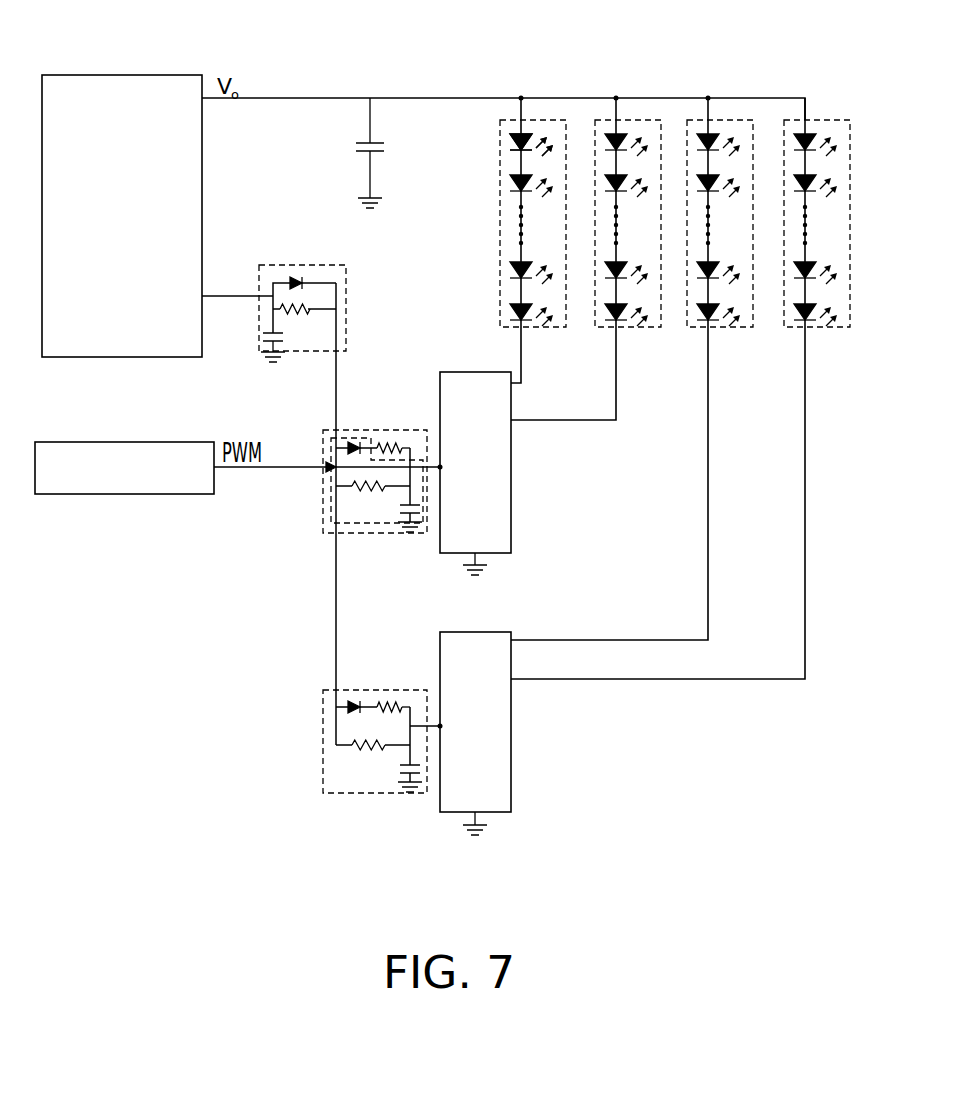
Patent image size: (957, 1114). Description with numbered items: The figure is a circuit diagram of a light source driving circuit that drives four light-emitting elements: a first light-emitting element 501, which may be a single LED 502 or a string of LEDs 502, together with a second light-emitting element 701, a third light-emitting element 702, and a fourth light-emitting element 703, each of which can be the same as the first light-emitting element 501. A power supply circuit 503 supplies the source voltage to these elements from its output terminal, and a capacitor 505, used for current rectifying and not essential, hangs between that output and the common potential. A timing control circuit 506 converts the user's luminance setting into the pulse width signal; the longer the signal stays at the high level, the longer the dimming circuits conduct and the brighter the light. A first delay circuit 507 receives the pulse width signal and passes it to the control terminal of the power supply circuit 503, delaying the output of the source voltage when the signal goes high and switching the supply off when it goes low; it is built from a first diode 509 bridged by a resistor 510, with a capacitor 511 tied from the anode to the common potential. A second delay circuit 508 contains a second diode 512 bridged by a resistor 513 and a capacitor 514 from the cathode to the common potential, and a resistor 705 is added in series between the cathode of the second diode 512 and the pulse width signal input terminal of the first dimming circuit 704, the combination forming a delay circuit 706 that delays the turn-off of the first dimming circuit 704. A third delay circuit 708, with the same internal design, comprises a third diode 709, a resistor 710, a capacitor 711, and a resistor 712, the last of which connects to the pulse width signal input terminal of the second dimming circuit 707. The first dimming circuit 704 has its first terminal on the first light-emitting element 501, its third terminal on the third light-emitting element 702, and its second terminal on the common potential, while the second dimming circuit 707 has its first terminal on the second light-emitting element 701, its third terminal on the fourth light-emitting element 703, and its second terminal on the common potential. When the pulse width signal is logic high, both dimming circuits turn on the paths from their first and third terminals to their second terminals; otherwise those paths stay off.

The first light-emitting element 501 is at (530, 120).
The LED 502 is at (537, 130).
The power supply circuit 503 is at (133, 75).
The capacitor 505 is at (362, 155).
The timing control circuit 506 is at (140, 494).
The first delay circuit 507 is at (311, 481).
The second delay circuit 508 is at (340, 496).
The first diode 509 is at (297, 276).
The resistor 510 is at (301, 314).
The capacitor 511 is at (268, 336).
The second diode 512 is at (353, 444).
The resistor 513 is at (372, 490).
The capacitor 514 is at (403, 515).
The second light-emitting element 701 is at (715, 120).
The third light-emitting element 702 is at (625, 120).
The fourth light-emitting element 703 is at (815, 120).
The first dimming circuit 704 is at (511, 472).
The resistor 705 is at (390, 444).
The first delay circuit 706 is at (346, 496).
The second dimming circuit 707 is at (511, 735).
The third delay circuit 708 is at (341, 756).
The third diode 709 is at (353, 703).
The resistor 710 is at (368, 750).
The capacitor 711 is at (403, 776).
The resistor 712 is at (390, 703).